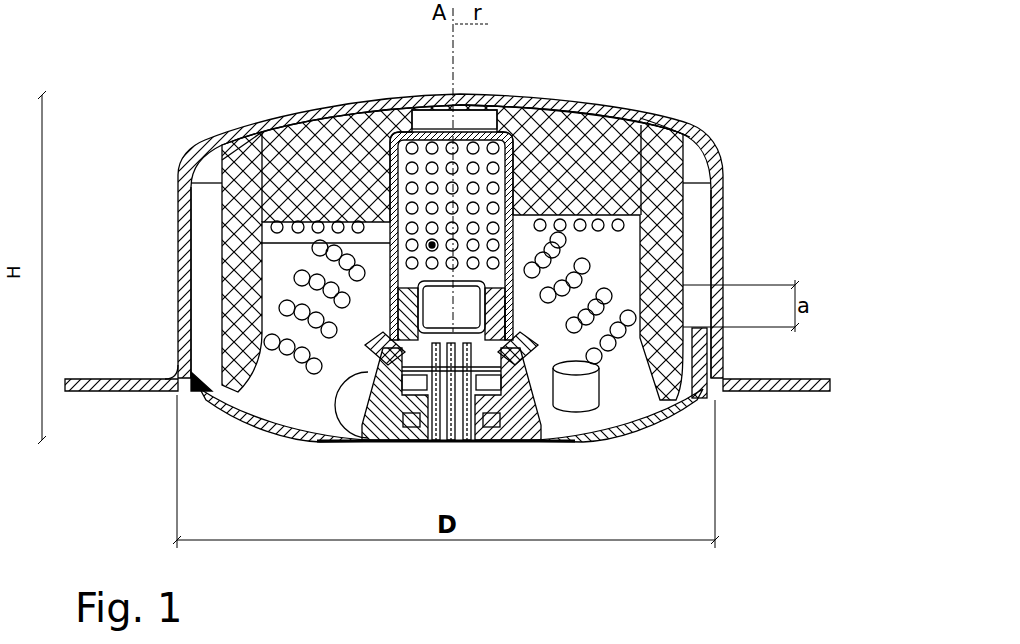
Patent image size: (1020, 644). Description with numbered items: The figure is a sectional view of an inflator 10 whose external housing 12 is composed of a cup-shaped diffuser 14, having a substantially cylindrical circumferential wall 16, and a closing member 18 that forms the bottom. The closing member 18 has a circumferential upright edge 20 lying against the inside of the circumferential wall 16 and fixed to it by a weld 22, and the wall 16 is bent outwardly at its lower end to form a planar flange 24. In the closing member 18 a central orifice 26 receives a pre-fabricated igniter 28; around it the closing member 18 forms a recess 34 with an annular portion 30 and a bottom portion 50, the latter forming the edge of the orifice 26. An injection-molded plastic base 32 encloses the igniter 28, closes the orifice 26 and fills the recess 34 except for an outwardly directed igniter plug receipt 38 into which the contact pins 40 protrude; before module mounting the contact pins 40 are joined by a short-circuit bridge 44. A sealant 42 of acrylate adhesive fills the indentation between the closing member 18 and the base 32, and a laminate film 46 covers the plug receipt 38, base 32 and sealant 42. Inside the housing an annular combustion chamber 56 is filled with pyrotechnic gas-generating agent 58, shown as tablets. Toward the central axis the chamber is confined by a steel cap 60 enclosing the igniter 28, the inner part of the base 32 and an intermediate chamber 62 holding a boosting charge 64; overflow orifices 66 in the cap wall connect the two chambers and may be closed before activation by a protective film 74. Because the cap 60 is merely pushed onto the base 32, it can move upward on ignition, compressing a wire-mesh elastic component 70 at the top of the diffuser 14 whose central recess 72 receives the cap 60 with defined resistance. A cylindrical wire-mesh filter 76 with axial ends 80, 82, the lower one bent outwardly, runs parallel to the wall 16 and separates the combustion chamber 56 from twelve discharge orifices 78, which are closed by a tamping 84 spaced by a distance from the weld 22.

The inflator 10 is at (181, 76).
The external housing 12 is at (191, 162).
The diffuser 14 is at (640, 130).
The circumferential wall 16 is at (723, 303).
The closing member 18 is at (262, 422).
The upright edge 20 is at (708, 357).
The weld 22 is at (191, 355).
The flange 24 is at (95, 393).
The central orifice 26 is at (508, 332).
The igniter 28 is at (452, 252).
The annular portion 30 is at (333, 412).
The base 32 is at (397, 338).
The recess 34 is at (517, 443).
The igniter plug receipt 38 is at (409, 442).
The contact pins 40 is at (455, 443).
The sealant 42 is at (532, 441).
The short-circuit bridge 44 is at (493, 444).
The laminate film 46 is at (344, 444).
The bottom portion 50 is at (517, 345).
The combustion chamber 56 is at (278, 263).
The gas-generating agent 58 is at (505, 272).
The cap 60 is at (345, 303).
The intermediate chamber 62 is at (425, 130).
The boosting charge 64 is at (430, 245).
The overflow orifices 66 is at (418, 300).
The elastic component 70 is at (542, 115).
The central recess 72 is at (480, 115).
The protective film 74 is at (222, 184).
The filter 76 is at (668, 275).
The discharge orifices 78 is at (185, 240).
The axial end 80 is at (218, 397).
The axial end 82 is at (262, 142).
The tamping 84 is at (560, 248).